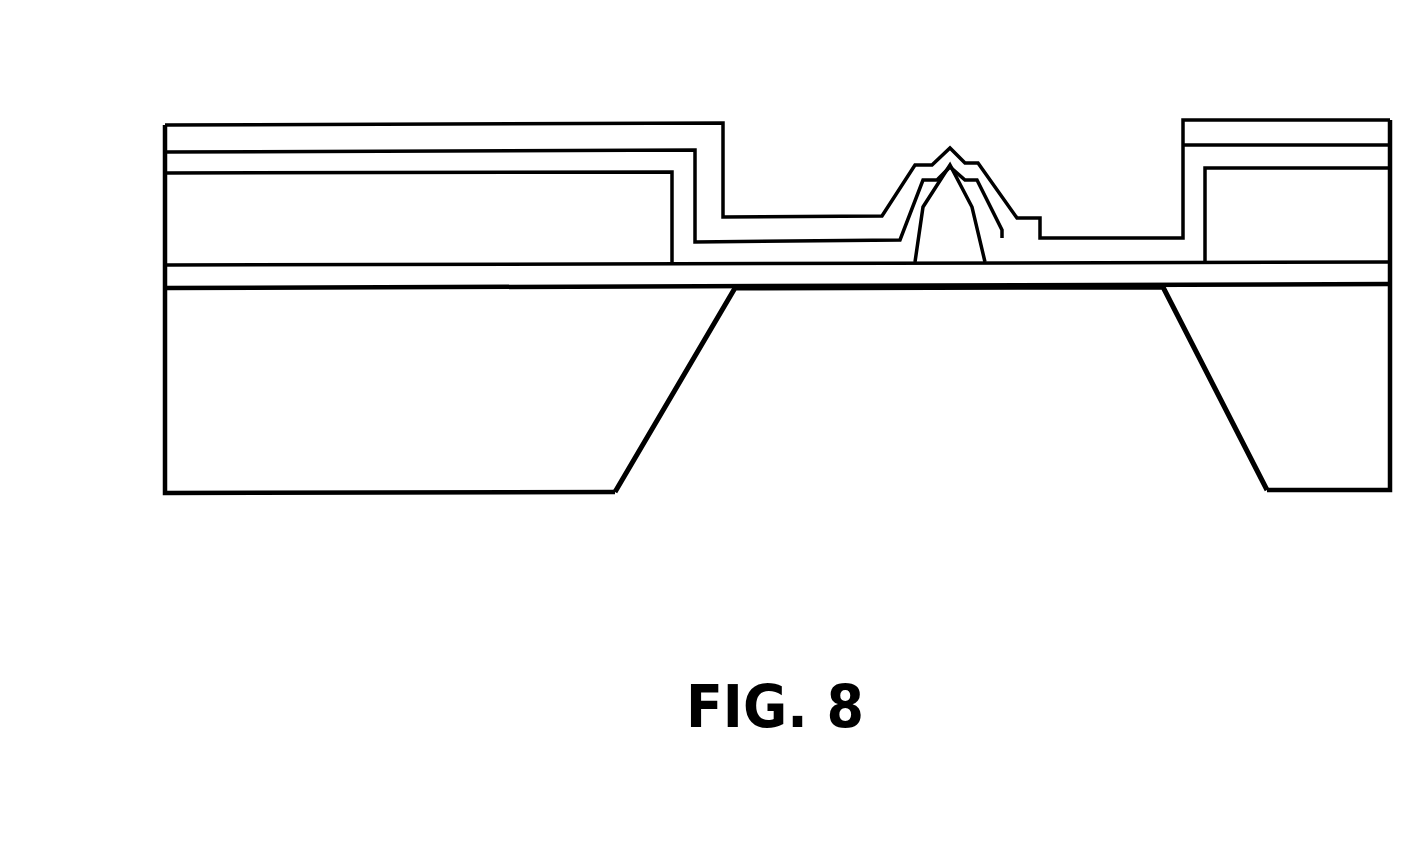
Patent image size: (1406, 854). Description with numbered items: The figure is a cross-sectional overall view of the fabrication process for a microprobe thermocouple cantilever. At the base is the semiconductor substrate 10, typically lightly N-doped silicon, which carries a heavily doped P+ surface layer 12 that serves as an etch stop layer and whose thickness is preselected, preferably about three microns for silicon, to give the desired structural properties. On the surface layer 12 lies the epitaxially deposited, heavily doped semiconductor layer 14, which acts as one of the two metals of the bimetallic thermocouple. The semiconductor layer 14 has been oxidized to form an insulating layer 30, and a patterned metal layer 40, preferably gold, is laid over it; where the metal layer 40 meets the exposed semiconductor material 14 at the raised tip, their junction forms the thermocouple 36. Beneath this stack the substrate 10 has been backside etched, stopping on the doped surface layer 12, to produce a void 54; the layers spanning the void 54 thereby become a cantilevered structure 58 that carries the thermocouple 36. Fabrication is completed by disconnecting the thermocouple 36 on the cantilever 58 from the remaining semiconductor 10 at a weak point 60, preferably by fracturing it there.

The semiconductor substrate 10 is at (166, 380).
The heavily doped surface layer 12 is at (165, 277).
The semiconductor layer 14 is at (165, 220).
The oxide layer 30 is at (165, 163).
The thermocouple 36 is at (955, 125).
The patterned metal layer 40 is at (165, 137).
The void 54 is at (810, 492).
The cantilevered structure 58 is at (923, 346).
The weak point 60 is at (1095, 308).